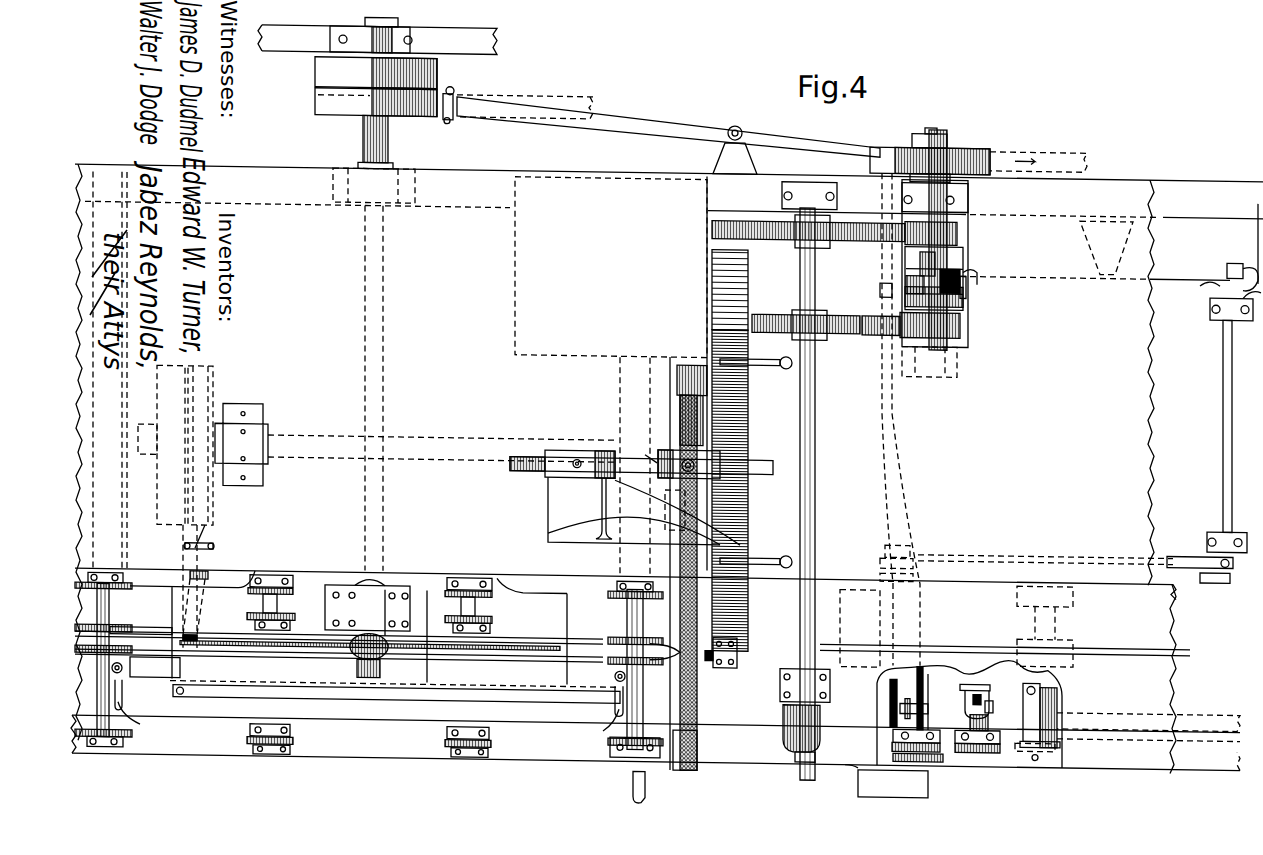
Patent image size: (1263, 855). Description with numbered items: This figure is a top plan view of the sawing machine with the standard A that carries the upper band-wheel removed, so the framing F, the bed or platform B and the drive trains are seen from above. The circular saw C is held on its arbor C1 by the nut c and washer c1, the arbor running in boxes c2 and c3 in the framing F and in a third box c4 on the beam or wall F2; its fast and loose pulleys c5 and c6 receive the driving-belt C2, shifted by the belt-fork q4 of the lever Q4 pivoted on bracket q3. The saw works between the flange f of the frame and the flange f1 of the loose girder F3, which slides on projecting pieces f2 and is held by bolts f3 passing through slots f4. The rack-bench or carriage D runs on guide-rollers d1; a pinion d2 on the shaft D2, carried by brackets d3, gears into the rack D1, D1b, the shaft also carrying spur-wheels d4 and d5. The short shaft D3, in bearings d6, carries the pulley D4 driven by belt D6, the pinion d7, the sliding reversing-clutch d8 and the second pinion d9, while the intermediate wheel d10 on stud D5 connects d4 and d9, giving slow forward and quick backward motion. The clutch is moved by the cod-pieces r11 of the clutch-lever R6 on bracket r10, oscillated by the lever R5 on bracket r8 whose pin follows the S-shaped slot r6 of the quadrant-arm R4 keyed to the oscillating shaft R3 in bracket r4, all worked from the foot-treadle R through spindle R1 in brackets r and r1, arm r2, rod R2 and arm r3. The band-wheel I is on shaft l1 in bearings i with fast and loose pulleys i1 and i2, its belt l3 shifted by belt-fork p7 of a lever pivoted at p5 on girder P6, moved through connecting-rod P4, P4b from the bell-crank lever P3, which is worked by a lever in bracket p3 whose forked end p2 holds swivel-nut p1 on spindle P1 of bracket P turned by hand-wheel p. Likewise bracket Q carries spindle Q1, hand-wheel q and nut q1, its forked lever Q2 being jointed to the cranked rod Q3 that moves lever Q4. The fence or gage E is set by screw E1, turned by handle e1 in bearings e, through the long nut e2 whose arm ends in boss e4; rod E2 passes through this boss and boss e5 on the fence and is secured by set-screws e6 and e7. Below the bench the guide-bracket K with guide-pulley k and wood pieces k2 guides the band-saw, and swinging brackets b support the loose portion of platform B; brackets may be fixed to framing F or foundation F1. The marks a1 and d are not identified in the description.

The framing F is at (667, 469).
The bed or platform B is at (625, 422).
The post or standard A is at (611, 267).
The beam or wall F2 is at (377, 40).
The third box c4 is at (371, 35).
The loose pulley c6 is at (376, 73).
The fast pulley c5 is at (376, 102).
The arbor C1 is at (381, 343).
The box c3 is at (374, 185).
The lever Q4 is at (695, 110).
The belt-fork q4 is at (457, 101).
The driving-belt C2 is at (525, 102).
The bracket q3 is at (735, 150).
The pulley D4 is at (960, 134).
The short shaft D3 is at (930, 116).
The belt D6 is at (1050, 161).
The rack D1 is at (941, 265).
The bearings d6 is at (968, 181).
The pinion d7 is at (958, 213).
The spur-wheel d5 is at (712, 219).
The clutch-lever R6 is at (905, 262).
The stud D5 is at (880, 280).
The cod-pieces r11 is at (980, 272).
The bracket r10 is at (970, 267).
The sliding reversing-clutch d8 is at (963, 286).
The second pinion d9 is at (960, 321).
The intermediate wheel d10 is at (865, 303).
The spur-wheel d4 is at (775, 303).
The brackets d3 is at (790, 180).
The shaft D2 is at (810, 494).
The pinion d2 is at (782, 725).
The cranked rod Q3 is at (916, 589).
The driving band-wheel I is at (730, 451).
The screw E1 is at (690, 704).
The bearings e is at (677, 371).
The boxes or bearings i is at (703, 411).
The loose pulley i2 is at (171, 444).
The fast pulley i1 is at (200, 445).
The band-wheel shaft l1 is at (442, 445).
The belt l3 is at (214, 570).
The belt-fork p7 is at (216, 538).
The beam or girder P6 is at (191, 580).
The pivot p5 is at (190, 628).
The short shaft or rod E2 is at (520, 460).
The boss e5 is at (588, 445).
The set-screw e7 is at (575, 451).
The set-screw e6 is at (689, 464).
The long boss e4 is at (641, 450).
The fence or gage E is at (644, 511).
The long nut e2 is at (675, 510).
The swinging brackets b is at (756, 456).
The guide-pulley k is at (716, 658).
The forked guide-bracket K is at (688, 662).
The pieces of wood k2 is at (736, 650).
The handle e1 is at (647, 788).
The flange f is at (157, 625).
The bolts f3 is at (122, 666).
The projecting pieces f2 is at (122, 690).
The slots f4 is at (368, 722).
The bearing a1 is at (608, 737).
The girder F3 is at (395, 673).
The long connecting-rod P4 is at (304, 690).
The shaft d is at (1009, 646).
The circular saw C is at (240, 648).
The washer c1 is at (352, 650).
The nut c is at (380, 663).
The box c2 is at (367, 605).
The guide-rollers d1 is at (128, 573).
The flange f1 is at (510, 648).
The bracket r8 is at (1106, 248).
The oscillating lever R5 is at (1178, 259).
The S-shaped slot r6 is at (1242, 266).
The upright quadrant-arm R4 is at (1208, 284).
The bracket r4 is at (1211, 304).
The oscillating shaft R3 is at (1227, 436).
The bracket r is at (1236, 517).
The rod R2 is at (1000, 547).
The upright arm r3 is at (1218, 560).
The upright arm r2 is at (883, 550).
The bracket r1 is at (878, 561).
The spindle R1 is at (890, 608).
The rack-bench or carriage D is at (993, 676).
The rack D1b is at (1148, 726).
The foundation F1 is at (1148, 755).
The spindle Q1 is at (928, 698).
The forked lever Q2 is at (888, 690).
The nut q1 is at (896, 700).
The bracket Q is at (932, 716).
The bracket P is at (990, 716).
The spindle P1 is at (978, 676).
The long connecting-rod P4b is at (948, 658).
The forked end p2 is at (972, 678).
The swivel-nut p1 is at (994, 690).
The bracket p3 is at (986, 696).
The bell-crank lever P3 is at (1053, 676).
The hand-wheel p is at (979, 738).
The hand-wheel q is at (935, 750).
The foot-treadle R is at (886, 781).